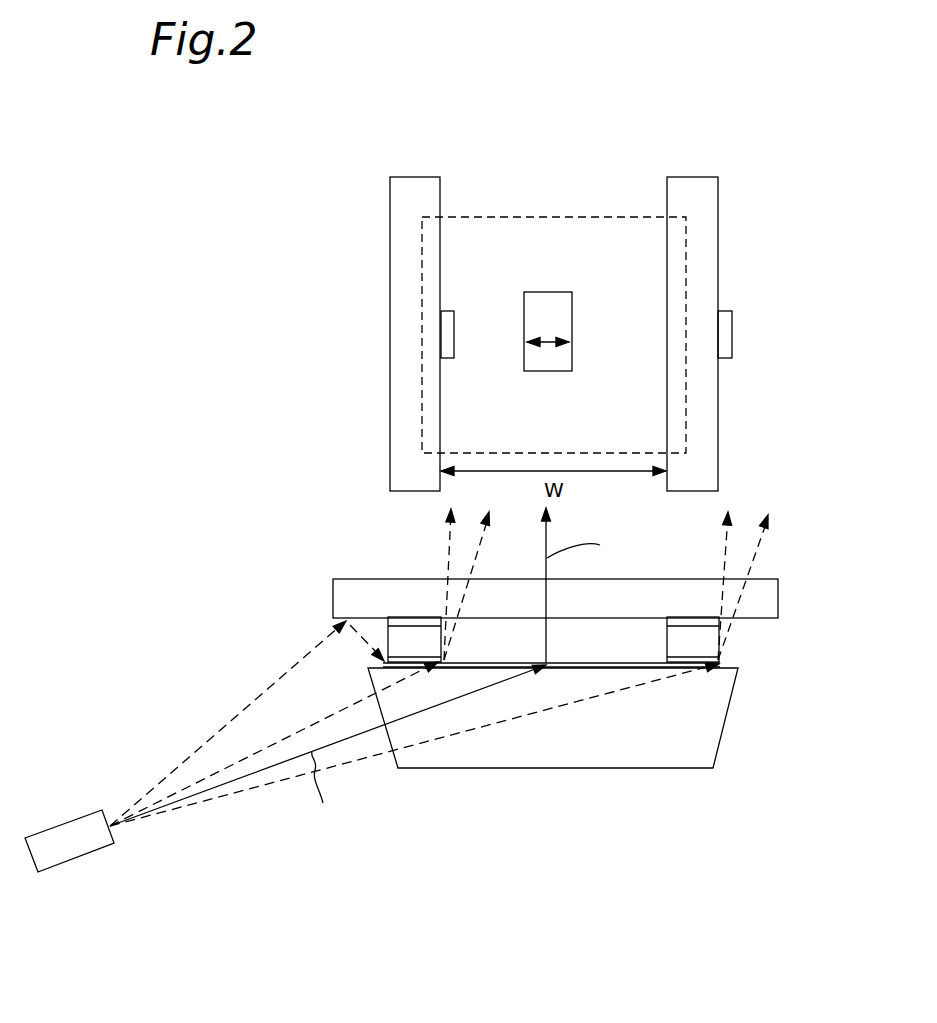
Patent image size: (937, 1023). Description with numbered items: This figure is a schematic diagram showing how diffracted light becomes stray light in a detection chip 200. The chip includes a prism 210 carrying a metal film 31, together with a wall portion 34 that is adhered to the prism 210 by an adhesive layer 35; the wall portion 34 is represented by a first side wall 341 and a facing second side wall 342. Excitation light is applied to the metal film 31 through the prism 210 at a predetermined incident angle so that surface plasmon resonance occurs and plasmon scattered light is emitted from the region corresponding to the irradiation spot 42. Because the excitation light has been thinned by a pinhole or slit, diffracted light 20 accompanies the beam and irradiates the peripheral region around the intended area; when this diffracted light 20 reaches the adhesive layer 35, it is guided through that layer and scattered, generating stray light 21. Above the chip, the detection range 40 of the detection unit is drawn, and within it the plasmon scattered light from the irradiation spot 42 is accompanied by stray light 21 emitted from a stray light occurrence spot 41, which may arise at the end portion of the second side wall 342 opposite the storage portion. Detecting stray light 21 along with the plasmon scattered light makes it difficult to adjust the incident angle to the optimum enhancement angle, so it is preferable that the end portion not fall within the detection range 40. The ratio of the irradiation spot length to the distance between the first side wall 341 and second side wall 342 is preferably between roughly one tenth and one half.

The diffracted light 20 is at (240, 712).
The stray light 21 is at (443, 557).
The metal film 31 is at (612, 670).
The wall portion 34 is at (608, 639).
The first side wall 341 is at (428, 644).
The second side wall 342 is at (703, 643).
The adhesive layer 35 is at (384, 657).
The detection range 40 is at (533, 217).
The stray light occurrence spot 41 is at (443, 330).
The irradiation spot 42 is at (547, 322).
The detection chip 200 is at (264, 559).
The prism 210 is at (546, 769).